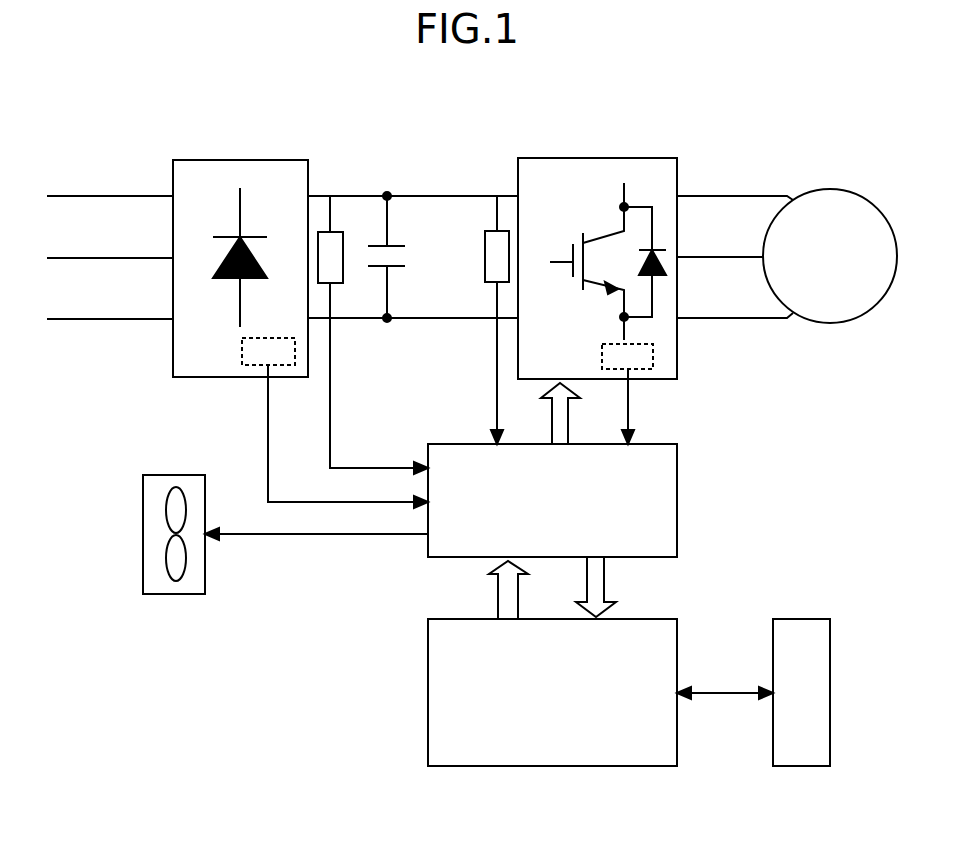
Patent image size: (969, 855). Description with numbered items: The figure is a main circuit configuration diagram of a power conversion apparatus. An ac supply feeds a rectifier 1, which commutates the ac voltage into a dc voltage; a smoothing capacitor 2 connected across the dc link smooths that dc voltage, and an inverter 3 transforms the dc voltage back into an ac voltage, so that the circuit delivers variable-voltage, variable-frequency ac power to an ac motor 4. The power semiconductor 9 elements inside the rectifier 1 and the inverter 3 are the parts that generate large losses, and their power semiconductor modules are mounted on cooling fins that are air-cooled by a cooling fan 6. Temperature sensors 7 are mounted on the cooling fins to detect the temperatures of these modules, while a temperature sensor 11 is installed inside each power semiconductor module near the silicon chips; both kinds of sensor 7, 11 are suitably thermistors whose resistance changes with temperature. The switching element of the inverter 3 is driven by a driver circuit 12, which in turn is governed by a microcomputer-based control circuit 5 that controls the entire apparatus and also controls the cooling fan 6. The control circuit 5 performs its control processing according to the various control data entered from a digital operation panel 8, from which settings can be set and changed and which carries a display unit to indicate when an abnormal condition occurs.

The rectifier 1 is at (240, 160).
The smoothing capacitor 2 is at (408, 256).
The inverter 3 is at (598, 158).
The ac motor 4 is at (832, 188).
The control circuit 5 is at (428, 693).
The cooling fan 6 is at (143, 532).
The temperature sensor 7 is at (330, 232).
The digital operation panel 8 is at (800, 619).
The power semiconductor 9 is at (246, 232).
The temperature sensor 11 is at (258, 365).
The driver circuit 12 is at (679, 498).